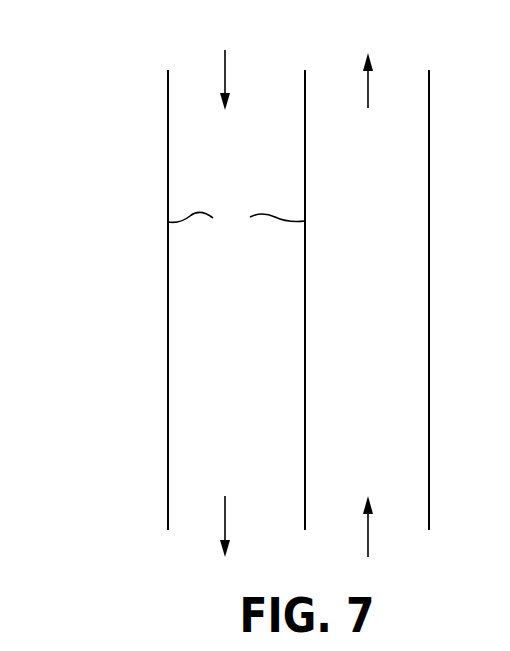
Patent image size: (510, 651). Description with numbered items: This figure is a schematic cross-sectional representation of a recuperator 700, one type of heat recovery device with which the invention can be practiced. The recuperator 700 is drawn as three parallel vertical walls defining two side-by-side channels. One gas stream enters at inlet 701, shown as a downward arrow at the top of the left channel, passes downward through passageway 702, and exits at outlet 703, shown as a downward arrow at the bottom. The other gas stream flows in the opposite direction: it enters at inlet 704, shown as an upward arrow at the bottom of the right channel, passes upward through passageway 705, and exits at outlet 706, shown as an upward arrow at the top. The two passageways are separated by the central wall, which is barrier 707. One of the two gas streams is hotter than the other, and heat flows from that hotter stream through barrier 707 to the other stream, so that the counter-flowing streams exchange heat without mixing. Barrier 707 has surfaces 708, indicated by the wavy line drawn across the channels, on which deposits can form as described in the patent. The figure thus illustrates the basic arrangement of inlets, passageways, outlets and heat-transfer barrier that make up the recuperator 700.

The recuperator 700 is at (104, 187).
The inlet 701 is at (223, 96).
The passageway 702 is at (190, 300).
The outlet 703 is at (225, 539).
The inlet 704 is at (371, 539).
The passageway 705 is at (382, 300).
The outlet 706 is at (368, 97).
The barrier 707 is at (308, 62).
The surfaces 708 is at (236, 221).